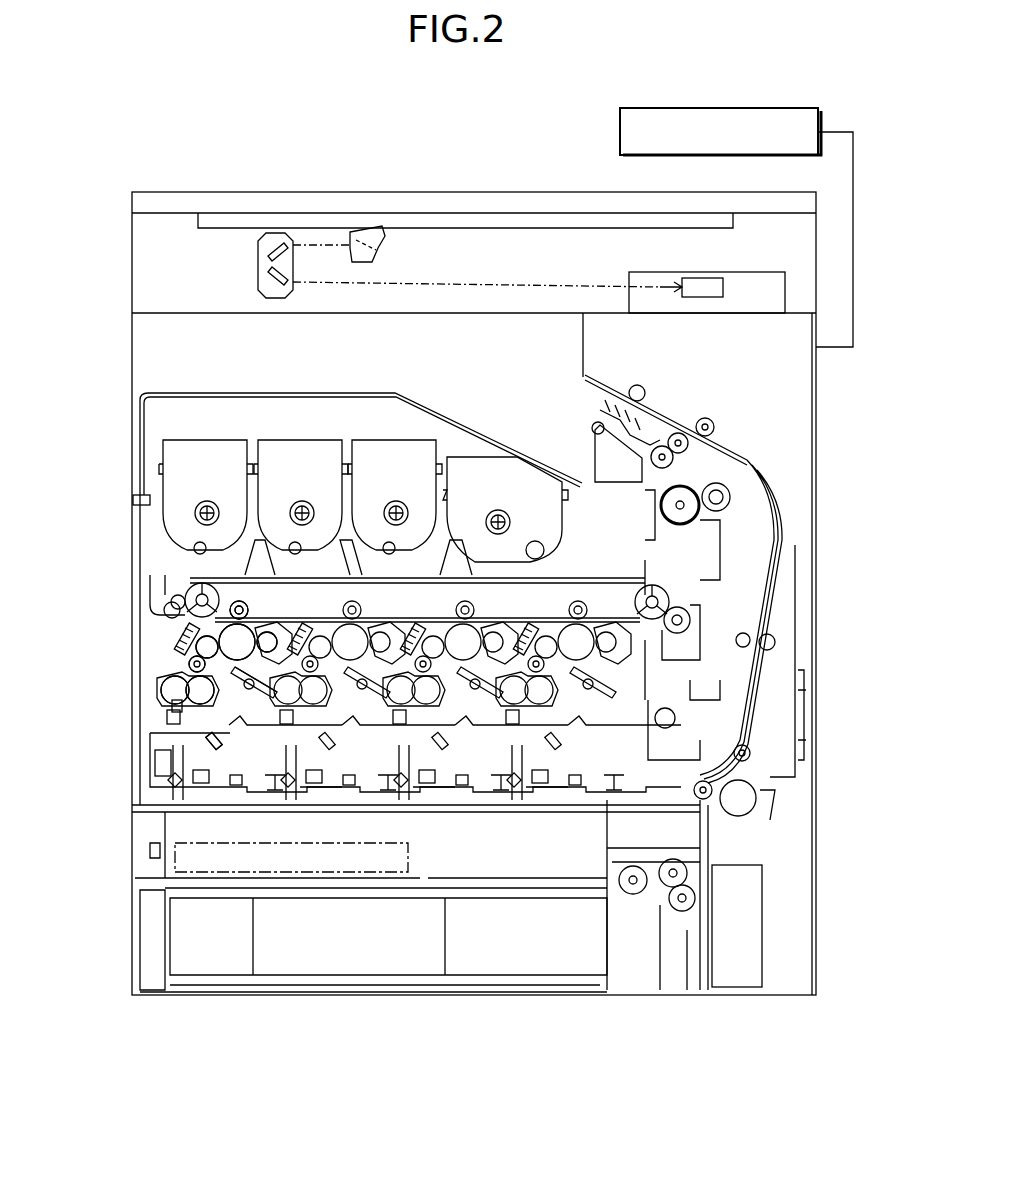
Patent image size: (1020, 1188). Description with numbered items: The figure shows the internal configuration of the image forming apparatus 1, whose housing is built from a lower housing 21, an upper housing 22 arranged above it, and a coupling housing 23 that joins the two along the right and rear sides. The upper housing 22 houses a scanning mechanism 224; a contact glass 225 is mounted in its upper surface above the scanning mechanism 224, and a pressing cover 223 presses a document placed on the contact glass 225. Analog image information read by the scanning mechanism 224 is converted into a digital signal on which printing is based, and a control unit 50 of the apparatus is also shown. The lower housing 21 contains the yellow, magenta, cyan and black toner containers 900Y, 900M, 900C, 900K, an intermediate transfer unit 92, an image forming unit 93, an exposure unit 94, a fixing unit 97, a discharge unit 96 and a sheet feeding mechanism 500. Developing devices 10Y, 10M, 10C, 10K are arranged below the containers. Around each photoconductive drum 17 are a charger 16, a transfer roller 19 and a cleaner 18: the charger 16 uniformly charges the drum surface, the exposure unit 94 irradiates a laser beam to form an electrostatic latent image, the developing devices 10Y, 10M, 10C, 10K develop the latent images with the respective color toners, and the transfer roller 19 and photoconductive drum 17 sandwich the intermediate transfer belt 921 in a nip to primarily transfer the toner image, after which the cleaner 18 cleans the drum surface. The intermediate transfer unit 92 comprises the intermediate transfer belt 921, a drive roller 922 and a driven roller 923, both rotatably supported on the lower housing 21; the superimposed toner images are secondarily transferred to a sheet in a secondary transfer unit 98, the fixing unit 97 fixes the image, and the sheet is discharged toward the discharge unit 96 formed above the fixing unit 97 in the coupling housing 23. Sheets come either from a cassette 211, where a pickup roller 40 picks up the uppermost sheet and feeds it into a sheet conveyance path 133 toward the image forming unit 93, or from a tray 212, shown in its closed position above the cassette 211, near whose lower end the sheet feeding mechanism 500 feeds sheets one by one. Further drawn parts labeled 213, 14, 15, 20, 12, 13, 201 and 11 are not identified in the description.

The image forming apparatus 1 is at (516, 165).
The upper housing 22 is at (150, 240).
The contact glass 225 is at (210, 215).
The pressing cover 223 is at (300, 198).
The scanning mechanism 224 is at (238, 258).
The control unit 50 is at (812, 120).
The coupling housing 23 is at (816, 388).
The cover 213 is at (140, 386).
The yellow toner container 900Y is at (208, 432).
The magenta toner container 900M is at (305, 432).
The cyan toner container 900C is at (395, 432).
The black toner container 900K is at (470, 450).
The intermediate transfer belt 921 is at (335, 583).
The intermediate transfer unit 92 is at (185, 598).
The driven roller 923 is at (172, 605).
The secondary transfer unit 98 is at (684, 590).
The drive roller 922 is at (680, 633).
The developing device 10Y is at (226, 660).
The developing device 10M is at (343, 630).
The developing device 10C is at (455, 630).
The developing device 10K is at (565, 630).
The photosensitive drum 14 is at (216, 641).
The charging roller 15 is at (196, 640).
The cleaner 18 is at (267, 630).
The photoconductive drum 17 is at (244, 600).
The transfer roller 19 is at (233, 603).
The cleaning member 20 is at (188, 662).
The developing device roller 12 is at (170, 702).
The developing device roller 13 is at (214, 690).
The charger 16 is at (265, 700).
The waste toner conveying member 201 is at (200, 700).
The toner supply member 11 is at (225, 712).
The image forming unit 93 is at (115, 684).
The exposure unit 94 is at (155, 770).
The discharge unit 96 is at (672, 442).
The fixing unit 97 is at (725, 465).
The tray 212 is at (805, 642).
The sheet feeding mechanism 500 is at (760, 800).
The sheet conveyance path 133 is at (712, 850).
The pickup roller 40 is at (633, 895).
The lower housing 21 is at (150, 848).
The cassette 211 is at (145, 960).